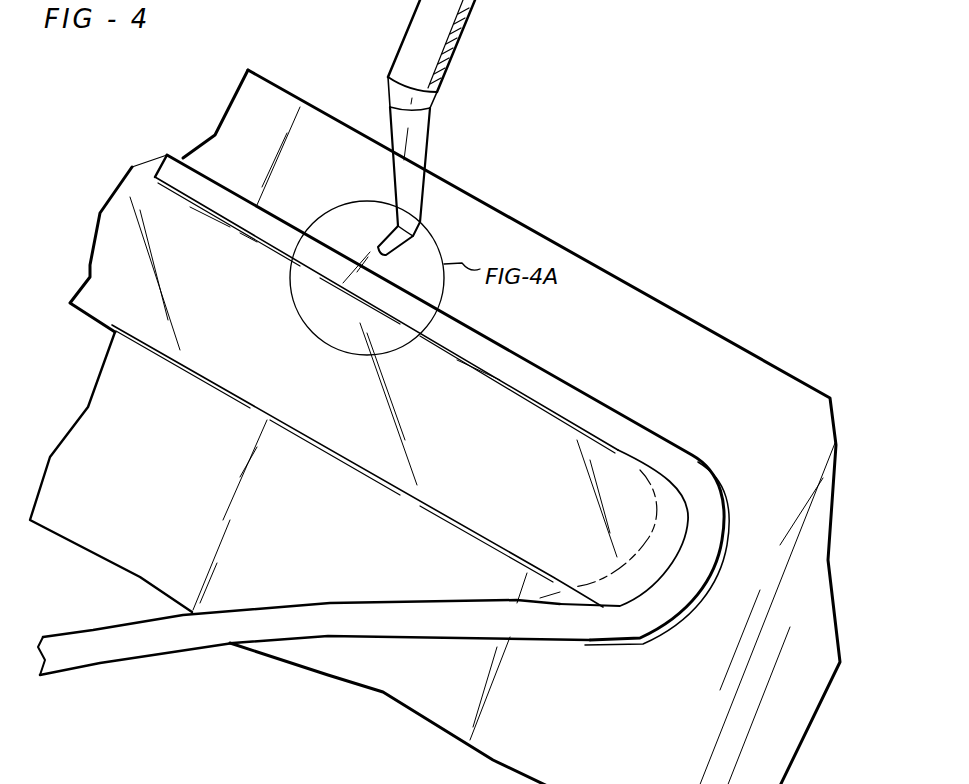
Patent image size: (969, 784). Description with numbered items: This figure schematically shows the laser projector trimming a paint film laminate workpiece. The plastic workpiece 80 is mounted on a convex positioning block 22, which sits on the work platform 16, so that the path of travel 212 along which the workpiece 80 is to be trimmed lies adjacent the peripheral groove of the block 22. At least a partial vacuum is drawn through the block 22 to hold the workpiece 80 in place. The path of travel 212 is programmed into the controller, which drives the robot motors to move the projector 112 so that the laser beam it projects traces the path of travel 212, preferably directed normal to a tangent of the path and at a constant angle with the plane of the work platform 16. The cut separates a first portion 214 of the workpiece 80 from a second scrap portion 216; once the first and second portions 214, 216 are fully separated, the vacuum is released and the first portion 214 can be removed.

The work platform 16 is at (650, 301).
The convex positioning block 22 is at (207, 380).
The workpiece 80 is at (600, 467).
The projector 112 is at (422, 157).
The path of travel 212 is at (460, 353).
The first portion 214 is at (447, 485).
The second portion 216 is at (87, 631).